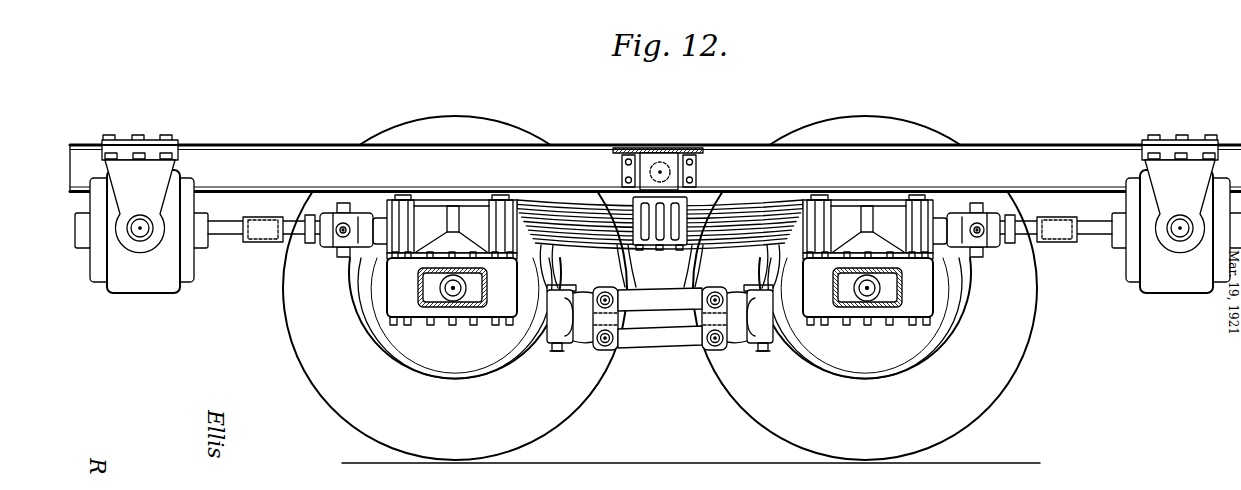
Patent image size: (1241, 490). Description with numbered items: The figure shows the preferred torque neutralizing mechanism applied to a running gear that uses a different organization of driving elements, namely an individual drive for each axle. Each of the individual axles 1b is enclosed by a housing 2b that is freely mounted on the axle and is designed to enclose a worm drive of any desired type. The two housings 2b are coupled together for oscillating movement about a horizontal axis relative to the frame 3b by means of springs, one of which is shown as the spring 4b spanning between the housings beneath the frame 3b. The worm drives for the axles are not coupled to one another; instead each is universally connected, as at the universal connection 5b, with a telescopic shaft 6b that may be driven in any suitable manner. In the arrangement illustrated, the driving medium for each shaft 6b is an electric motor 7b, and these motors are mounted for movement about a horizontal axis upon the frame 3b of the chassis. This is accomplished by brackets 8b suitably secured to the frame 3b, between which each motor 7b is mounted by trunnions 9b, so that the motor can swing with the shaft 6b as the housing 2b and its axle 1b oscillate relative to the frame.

The axle 1b is at (453, 292).
The housing 2b is at (398, 300).
The frame 3b is at (655, 168).
The spring 4b is at (727, 208).
The universal connection 5b is at (341, 249).
The telescopic shaft 6b is at (260, 243).
The electric motor 7b is at (157, 288).
The bracket 8b is at (660, 194).
The trunnion 9b is at (140, 232).